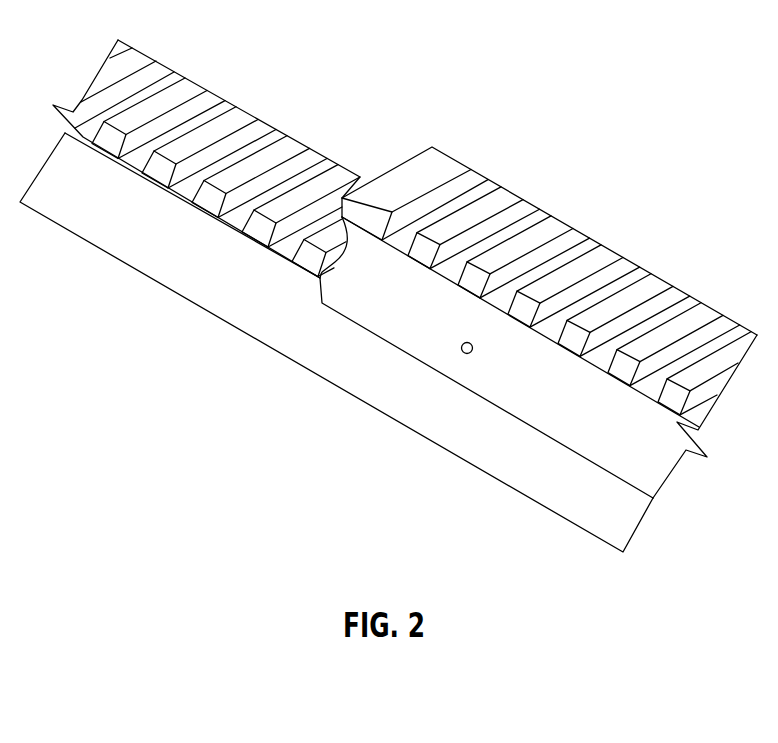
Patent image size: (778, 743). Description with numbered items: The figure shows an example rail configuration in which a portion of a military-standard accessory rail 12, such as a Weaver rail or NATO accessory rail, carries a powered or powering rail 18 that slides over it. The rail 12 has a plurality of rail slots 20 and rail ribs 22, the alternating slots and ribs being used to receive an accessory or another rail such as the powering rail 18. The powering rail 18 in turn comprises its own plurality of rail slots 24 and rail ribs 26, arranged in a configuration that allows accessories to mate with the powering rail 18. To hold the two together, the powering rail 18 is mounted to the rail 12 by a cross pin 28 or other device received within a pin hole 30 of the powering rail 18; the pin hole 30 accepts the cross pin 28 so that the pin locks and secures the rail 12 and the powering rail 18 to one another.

The rail 12 is at (92, 229).
The powering rail 18 is at (658, 472).
The rail slots 20 is at (272, 135).
The rail ribs 22 is at (188, 88).
The rail slots 24 is at (490, 178).
The rail ribs 26 is at (553, 236).
The cross pin 28 is at (457, 350).
The pin hole 30 is at (475, 356).